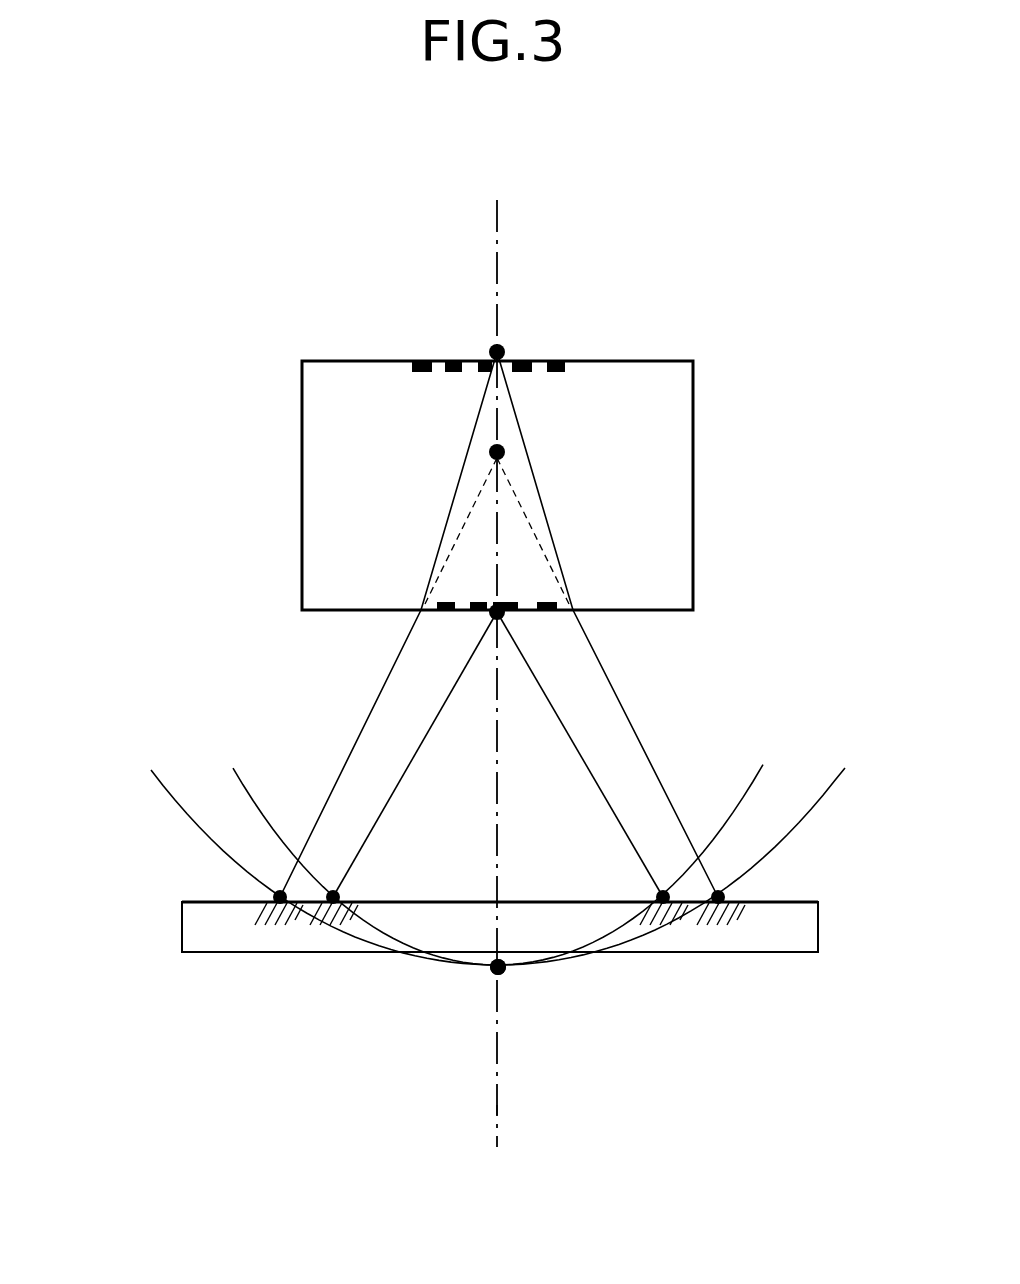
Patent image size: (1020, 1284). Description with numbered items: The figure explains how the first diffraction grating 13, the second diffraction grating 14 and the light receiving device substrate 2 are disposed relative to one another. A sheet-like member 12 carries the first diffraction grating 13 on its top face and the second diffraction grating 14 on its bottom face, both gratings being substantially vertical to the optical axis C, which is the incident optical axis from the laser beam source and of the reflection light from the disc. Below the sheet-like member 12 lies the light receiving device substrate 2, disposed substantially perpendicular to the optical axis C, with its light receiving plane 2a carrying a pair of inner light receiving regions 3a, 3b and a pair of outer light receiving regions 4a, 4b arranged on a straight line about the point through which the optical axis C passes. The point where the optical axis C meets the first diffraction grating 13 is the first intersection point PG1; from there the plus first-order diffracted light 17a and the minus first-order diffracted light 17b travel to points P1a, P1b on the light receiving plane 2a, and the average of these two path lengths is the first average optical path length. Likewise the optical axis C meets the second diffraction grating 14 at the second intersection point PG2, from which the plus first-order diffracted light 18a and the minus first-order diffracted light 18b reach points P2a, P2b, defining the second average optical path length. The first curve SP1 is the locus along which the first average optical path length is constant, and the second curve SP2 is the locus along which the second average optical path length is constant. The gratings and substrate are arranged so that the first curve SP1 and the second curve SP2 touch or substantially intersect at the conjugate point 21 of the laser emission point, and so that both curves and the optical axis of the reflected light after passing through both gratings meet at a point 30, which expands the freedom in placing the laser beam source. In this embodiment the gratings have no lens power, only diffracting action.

The light receiving device substrate 2 is at (193, 942).
The light receiving plane 2a is at (185, 905).
The inner light receiving region 3a is at (640, 900).
The inner light receiving region 3b is at (350, 902).
The outer light receiving region 4a is at (740, 913).
The outer light receiving region 4b is at (260, 918).
The sheet-like member 12 is at (302, 488).
The first diffraction grating 13 is at (552, 362).
The second diffraction grating 14 is at (532, 610).
The +primary-order diffracted light 17a is at (615, 688).
The -primary-order diffracted light 17b is at (380, 700).
The +primary-order diffracted light 18a is at (613, 802).
The -primary-order diffracted light 18b is at (408, 760).
The conjugate point 21 is at (505, 972).
The point 30 is at (498, 967).
The optical axis C is at (500, 1110).
The first intersection point PG1 is at (490, 346).
The second intersection point PG2 is at (503, 618).
The point P1a is at (737, 920).
The point P1b is at (282, 925).
The point P2a is at (677, 923).
The point P2b is at (333, 923).
The first curve SP1 is at (155, 792).
The second curve SP2 is at (242, 790).